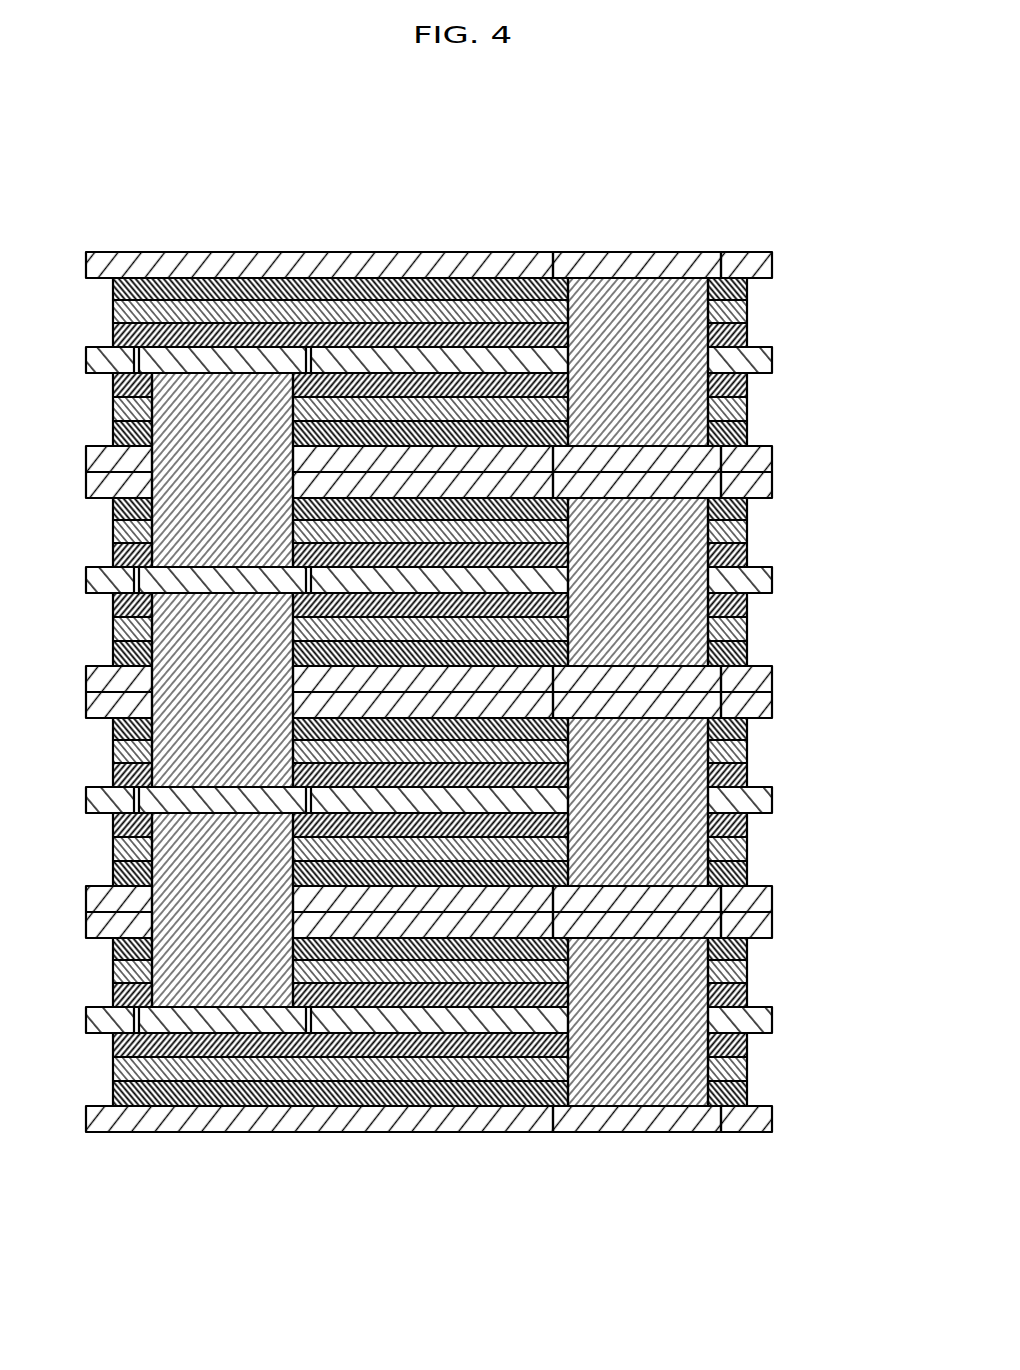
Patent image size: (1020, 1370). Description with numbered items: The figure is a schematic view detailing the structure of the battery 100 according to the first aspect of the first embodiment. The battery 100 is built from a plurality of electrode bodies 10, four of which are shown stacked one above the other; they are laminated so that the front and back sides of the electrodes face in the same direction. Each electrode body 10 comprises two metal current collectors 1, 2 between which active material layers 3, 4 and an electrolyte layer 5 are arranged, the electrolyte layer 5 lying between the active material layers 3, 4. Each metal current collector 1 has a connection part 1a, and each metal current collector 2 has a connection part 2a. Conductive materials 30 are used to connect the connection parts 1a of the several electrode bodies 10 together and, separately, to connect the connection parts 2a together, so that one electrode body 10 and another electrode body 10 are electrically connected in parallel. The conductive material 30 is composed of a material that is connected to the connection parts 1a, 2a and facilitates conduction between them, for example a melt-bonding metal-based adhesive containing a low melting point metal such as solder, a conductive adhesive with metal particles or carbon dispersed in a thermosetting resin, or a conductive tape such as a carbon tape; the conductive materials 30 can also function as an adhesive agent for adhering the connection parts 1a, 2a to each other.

The metal current collector 1 is at (786, 261).
The connection part 1a is at (619, 452).
The metal current collector 2 is at (786, 356).
The connection part 2a is at (261, 354).
The active material layer 3 is at (748, 289).
The active material layer 4 is at (748, 335).
The electrolyte layer 5 is at (748, 312).
The electrode body 10 is at (867, 155).
The conductive material 30 is at (155, 413).
The battery 100 is at (455, 116).